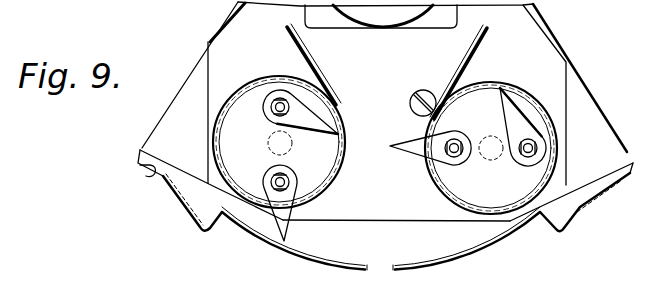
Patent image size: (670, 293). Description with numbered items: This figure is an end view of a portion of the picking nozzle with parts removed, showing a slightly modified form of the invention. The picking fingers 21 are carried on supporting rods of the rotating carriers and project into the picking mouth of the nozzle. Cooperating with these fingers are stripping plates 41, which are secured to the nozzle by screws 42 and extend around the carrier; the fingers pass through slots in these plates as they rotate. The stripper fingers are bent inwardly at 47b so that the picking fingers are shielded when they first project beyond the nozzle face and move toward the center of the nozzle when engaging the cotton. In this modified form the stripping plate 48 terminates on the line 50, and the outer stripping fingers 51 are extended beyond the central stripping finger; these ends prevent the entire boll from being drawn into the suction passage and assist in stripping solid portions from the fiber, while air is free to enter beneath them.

The picking finger 21 is at (514, 110).
The stripping plate 41 is at (317, 71).
The screw 42 is at (147, 171).
The inwardly bent portion 47b is at (547, 224).
The stripping plate 48 is at (372, 214).
The line 50 is at (386, 221).
The outer stripping finger end 51 is at (347, 257).